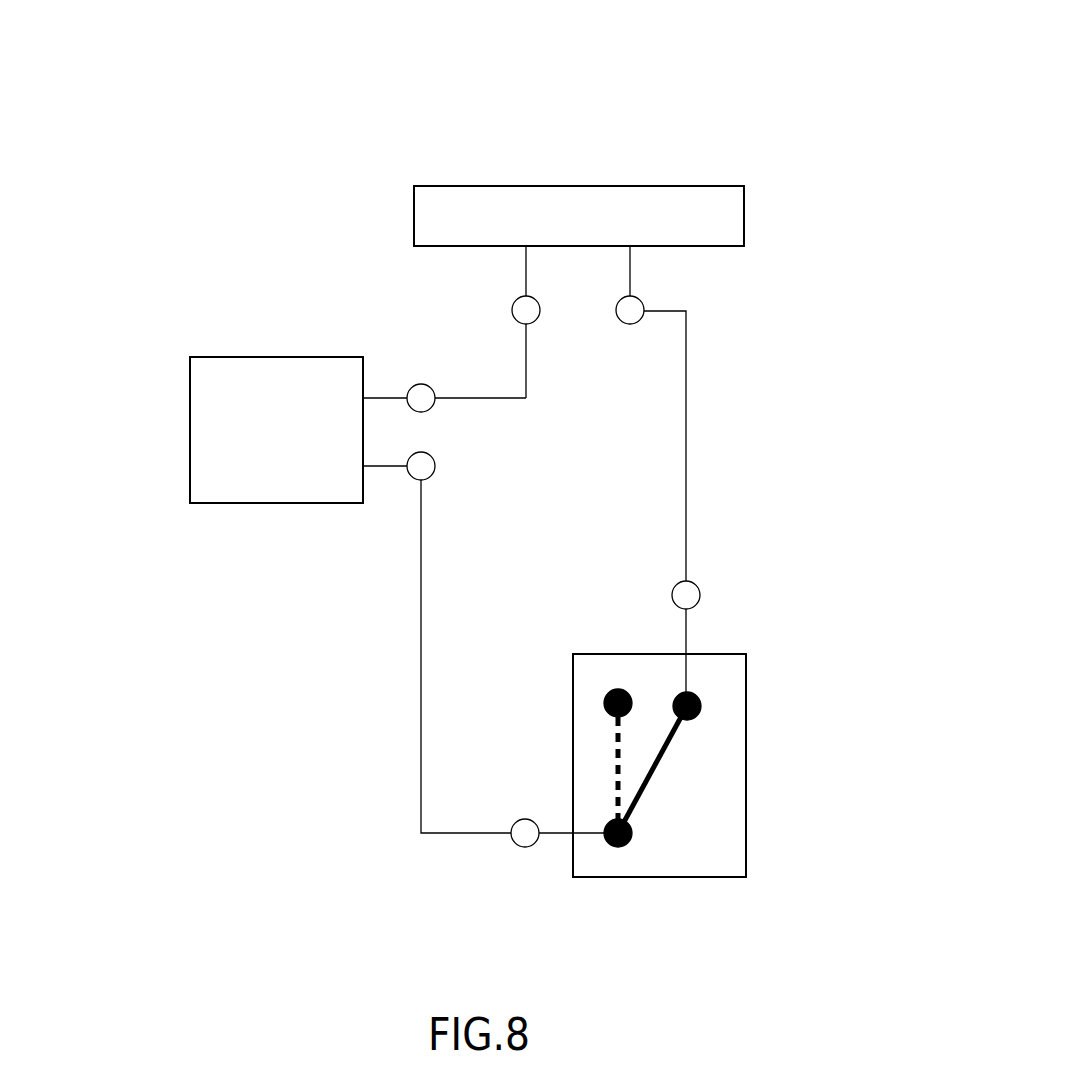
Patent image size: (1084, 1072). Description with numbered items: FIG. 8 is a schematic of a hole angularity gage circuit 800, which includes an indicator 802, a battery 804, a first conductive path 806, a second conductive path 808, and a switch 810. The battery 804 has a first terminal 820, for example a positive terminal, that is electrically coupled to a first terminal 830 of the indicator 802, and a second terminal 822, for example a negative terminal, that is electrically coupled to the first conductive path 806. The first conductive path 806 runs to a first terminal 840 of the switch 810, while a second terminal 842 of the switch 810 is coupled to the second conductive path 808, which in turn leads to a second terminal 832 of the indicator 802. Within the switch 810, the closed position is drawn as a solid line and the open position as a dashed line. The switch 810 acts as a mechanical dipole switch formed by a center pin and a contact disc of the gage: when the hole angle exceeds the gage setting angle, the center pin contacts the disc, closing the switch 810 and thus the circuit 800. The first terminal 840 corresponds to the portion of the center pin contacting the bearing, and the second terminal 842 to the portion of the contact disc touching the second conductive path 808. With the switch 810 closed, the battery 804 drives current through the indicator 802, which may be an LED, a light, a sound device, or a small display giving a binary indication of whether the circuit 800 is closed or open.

The hole angularity gage circuit 800 is at (777, 83).
The indicator 802 is at (575, 186).
The battery 804 is at (190, 427).
The first conductive path 806 is at (421, 585).
The second conductive path 808 is at (686, 340).
The switch 810 is at (663, 877).
The first terminal of battery 820 is at (415, 386).
The second terminal of battery 822 is at (436, 465).
The first terminal of indicator 830 is at (512, 312).
The second terminal of indicator 832 is at (634, 324).
The first terminal of switch 840 is at (530, 847).
The second terminal of switch 842 is at (700, 594).